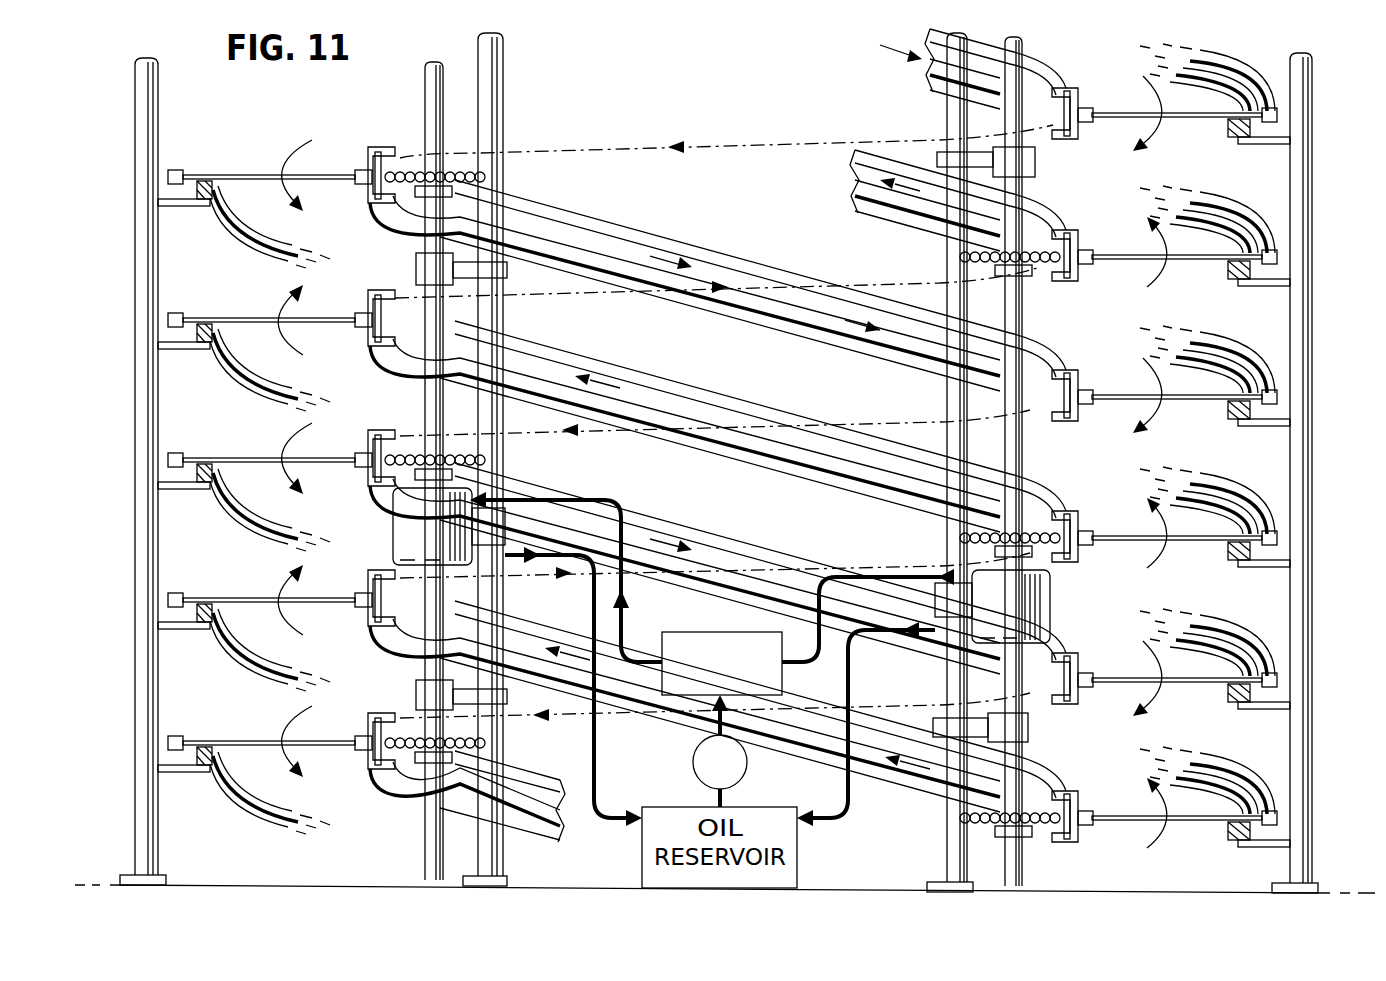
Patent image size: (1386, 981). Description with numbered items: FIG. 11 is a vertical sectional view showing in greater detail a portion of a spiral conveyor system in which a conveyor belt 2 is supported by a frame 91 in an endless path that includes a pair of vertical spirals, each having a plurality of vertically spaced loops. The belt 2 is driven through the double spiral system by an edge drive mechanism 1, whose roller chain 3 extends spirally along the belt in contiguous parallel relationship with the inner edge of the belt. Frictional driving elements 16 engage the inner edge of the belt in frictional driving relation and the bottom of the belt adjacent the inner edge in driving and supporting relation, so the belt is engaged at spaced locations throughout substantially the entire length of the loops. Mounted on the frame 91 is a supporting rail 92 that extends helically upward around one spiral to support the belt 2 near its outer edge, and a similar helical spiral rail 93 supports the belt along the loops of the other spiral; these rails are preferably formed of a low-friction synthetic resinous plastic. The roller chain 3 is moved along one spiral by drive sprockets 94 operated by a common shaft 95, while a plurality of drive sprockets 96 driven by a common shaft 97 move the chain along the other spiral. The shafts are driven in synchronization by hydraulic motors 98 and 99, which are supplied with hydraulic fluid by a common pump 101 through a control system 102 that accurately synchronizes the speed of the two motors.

The edge drive mechanism 1 is at (358, 783).
The conveyor belt 2 is at (258, 452).
The roller chain 3 is at (386, 302).
The frictional driving elements 16 is at (357, 724).
The frame 91 is at (137, 112).
The supporting rail 92 is at (207, 343).
The helical spiral rail 93 is at (207, 200).
The drive sprockets 94 is at (470, 165).
The common shaft 95 is at (427, 401).
The drive sprockets 96 is at (958, 257).
The common shaft 97 is at (1020, 452).
The hydraulic motor 98 is at (403, 533).
The hydraulic motor 99 is at (1053, 620).
The common pump 101 is at (692, 762).
The control system 102 is at (702, 630).